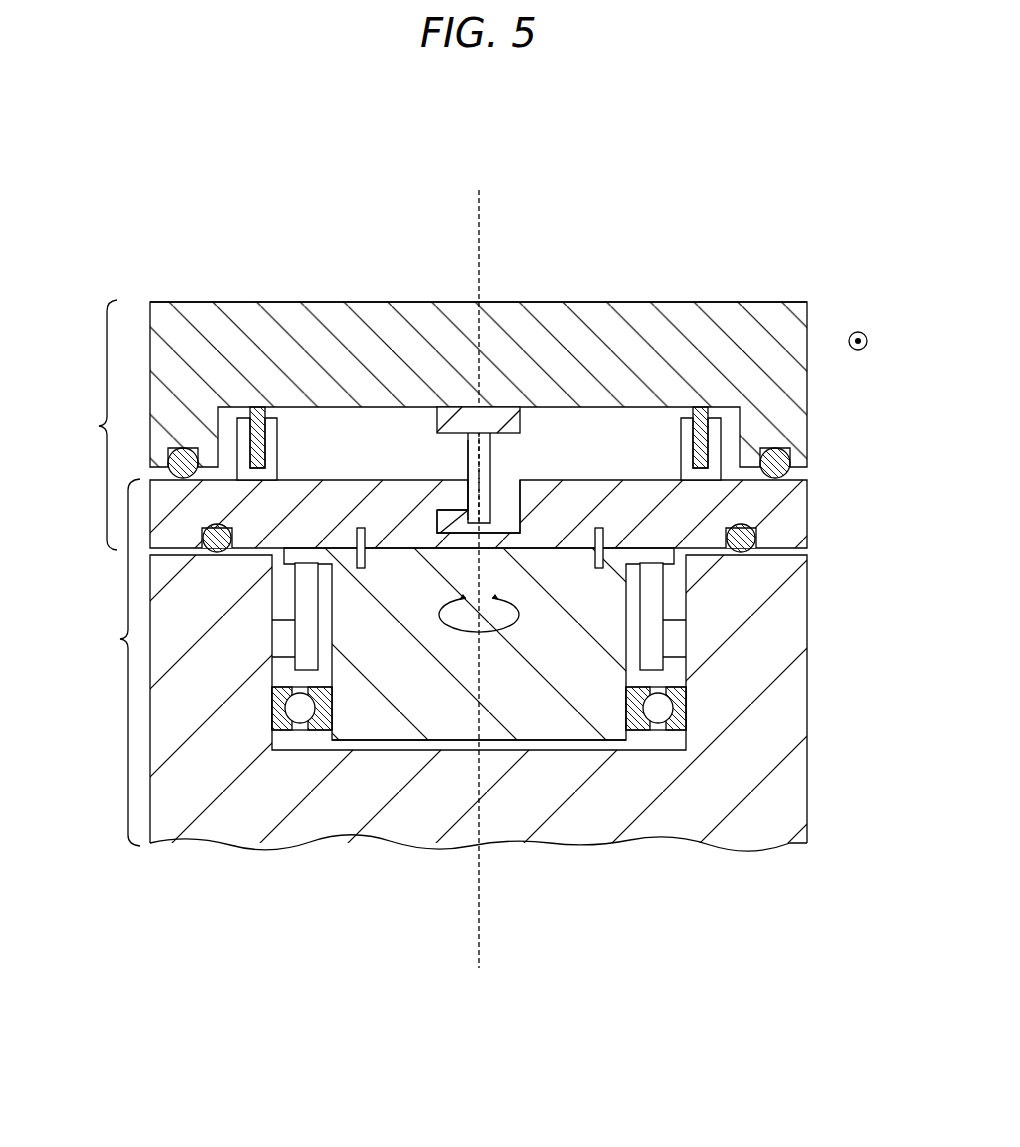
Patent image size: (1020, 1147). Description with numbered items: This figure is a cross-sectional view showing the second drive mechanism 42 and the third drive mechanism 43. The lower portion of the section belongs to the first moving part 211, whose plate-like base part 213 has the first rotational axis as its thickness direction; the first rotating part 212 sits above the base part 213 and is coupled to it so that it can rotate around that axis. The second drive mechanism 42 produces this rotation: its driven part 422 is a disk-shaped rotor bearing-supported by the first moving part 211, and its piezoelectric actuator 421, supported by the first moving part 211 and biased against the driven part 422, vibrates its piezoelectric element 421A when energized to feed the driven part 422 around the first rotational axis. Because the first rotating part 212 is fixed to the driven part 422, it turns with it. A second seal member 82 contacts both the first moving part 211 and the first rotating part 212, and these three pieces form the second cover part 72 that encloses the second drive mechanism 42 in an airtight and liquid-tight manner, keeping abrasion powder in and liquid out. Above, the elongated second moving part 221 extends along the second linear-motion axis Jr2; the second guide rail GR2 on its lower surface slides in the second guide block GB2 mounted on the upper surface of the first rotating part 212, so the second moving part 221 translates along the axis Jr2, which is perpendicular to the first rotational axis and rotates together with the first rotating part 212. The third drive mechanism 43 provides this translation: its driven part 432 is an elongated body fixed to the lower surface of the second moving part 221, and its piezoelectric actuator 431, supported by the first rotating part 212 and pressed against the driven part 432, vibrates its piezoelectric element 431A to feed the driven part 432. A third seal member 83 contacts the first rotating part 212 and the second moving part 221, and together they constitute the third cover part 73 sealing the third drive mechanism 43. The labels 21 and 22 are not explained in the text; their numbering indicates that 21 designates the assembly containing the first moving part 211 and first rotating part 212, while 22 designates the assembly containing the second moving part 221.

The base 21 is at (537, 691).
The first moving part 211 is at (790, 698).
The first rotating part 212 is at (792, 528).
The base part 213 is at (690, 790).
The movable member 22 is at (478, 306).
The second moving part 221 is at (393, 323).
The second drive mechanism 42 is at (479, 727).
The piezoelectric actuator 421 is at (303, 594).
The piezoelectric element 421A is at (293, 633).
The driven part 422 is at (410, 673).
The third drive mechanism 43 is at (476, 315).
The piezoelectric actuator 431 is at (491, 456).
The piezoelectric element 431A is at (466, 462).
The driven part 432 is at (457, 405).
The second cover part 72 is at (116, 662).
The third cover part 73 is at (92, 425).
The second seal member 82 is at (752, 532).
The third seal member 83 is at (793, 457).
The second guide rail GR2 is at (257, 410).
The second guide block GB2 is at (270, 416).
The second linear-motion axis Jr2 is at (878, 341).